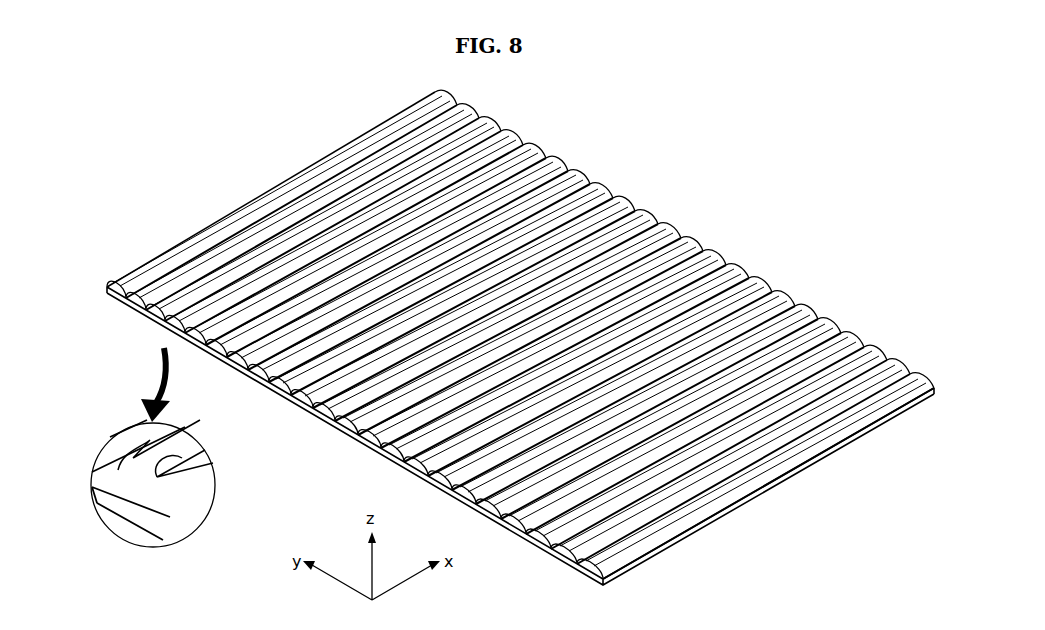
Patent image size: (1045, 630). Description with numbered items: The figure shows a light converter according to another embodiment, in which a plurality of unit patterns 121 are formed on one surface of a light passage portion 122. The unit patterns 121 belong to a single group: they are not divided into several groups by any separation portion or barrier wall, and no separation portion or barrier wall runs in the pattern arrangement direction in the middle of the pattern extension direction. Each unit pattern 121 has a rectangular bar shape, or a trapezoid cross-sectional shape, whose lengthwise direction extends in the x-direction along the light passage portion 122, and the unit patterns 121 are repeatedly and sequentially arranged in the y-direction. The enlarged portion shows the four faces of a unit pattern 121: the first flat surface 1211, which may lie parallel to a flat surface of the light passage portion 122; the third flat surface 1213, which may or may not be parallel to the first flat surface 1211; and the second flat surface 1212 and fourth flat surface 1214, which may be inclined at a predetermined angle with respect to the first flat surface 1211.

The unit pattern 121 is at (732, 258).
The light passage portion 122 is at (850, 440).
The first flat surface 1211 is at (145, 545).
The second flat surface 1212 is at (200, 483).
The third flat surface 1213 is at (140, 433).
The fourth flat surface 1214 is at (107, 440).